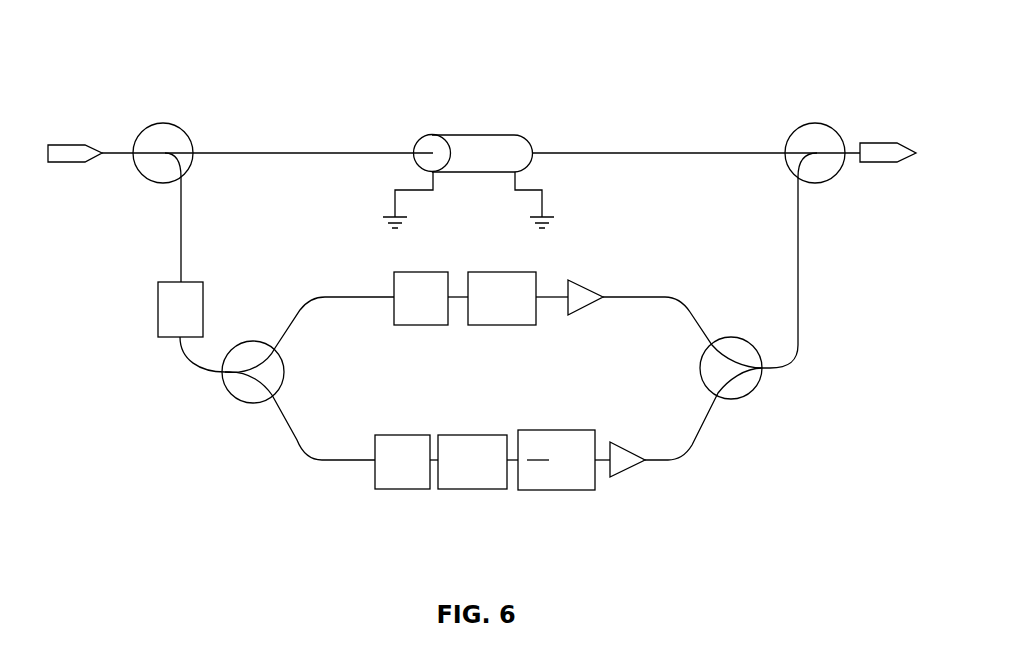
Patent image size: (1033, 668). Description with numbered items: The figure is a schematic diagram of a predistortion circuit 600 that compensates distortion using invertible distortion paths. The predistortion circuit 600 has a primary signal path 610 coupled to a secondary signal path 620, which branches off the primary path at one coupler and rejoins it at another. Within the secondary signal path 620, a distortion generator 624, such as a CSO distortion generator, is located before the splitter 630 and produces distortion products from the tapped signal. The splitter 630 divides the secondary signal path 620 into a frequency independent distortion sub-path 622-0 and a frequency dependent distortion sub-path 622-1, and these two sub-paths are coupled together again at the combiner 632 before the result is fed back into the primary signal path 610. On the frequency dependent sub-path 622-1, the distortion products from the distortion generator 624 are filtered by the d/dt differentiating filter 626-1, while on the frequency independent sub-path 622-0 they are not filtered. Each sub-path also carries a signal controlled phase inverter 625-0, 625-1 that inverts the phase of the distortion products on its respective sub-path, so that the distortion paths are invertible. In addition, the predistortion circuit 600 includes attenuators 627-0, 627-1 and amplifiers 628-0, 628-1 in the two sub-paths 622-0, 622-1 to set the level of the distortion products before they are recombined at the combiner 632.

The predistortion circuit 600 is at (252, 78).
The primary signal path 610 is at (487, 108).
The secondary signal path 620 is at (93, 312).
The distortion generator 624 is at (158, 290).
The splitter 630 is at (223, 385).
The frequency independent distortion sub-path 622-0 is at (263, 310).
The frequency dependent distortion sub-path 622-1 is at (278, 445).
The signal controlled phase inverter 625-0 is at (415, 325).
The signal controlled phase inverter 625-1 is at (403, 489).
The attenuator 627-0 is at (487, 325).
The attenuator 627-1 is at (482, 489).
The d/dt differentiating filter 626-1 is at (570, 490).
The amplifier 628-0 is at (587, 310).
The amplifier 628-1 is at (625, 470).
The combiner 632 is at (757, 390).